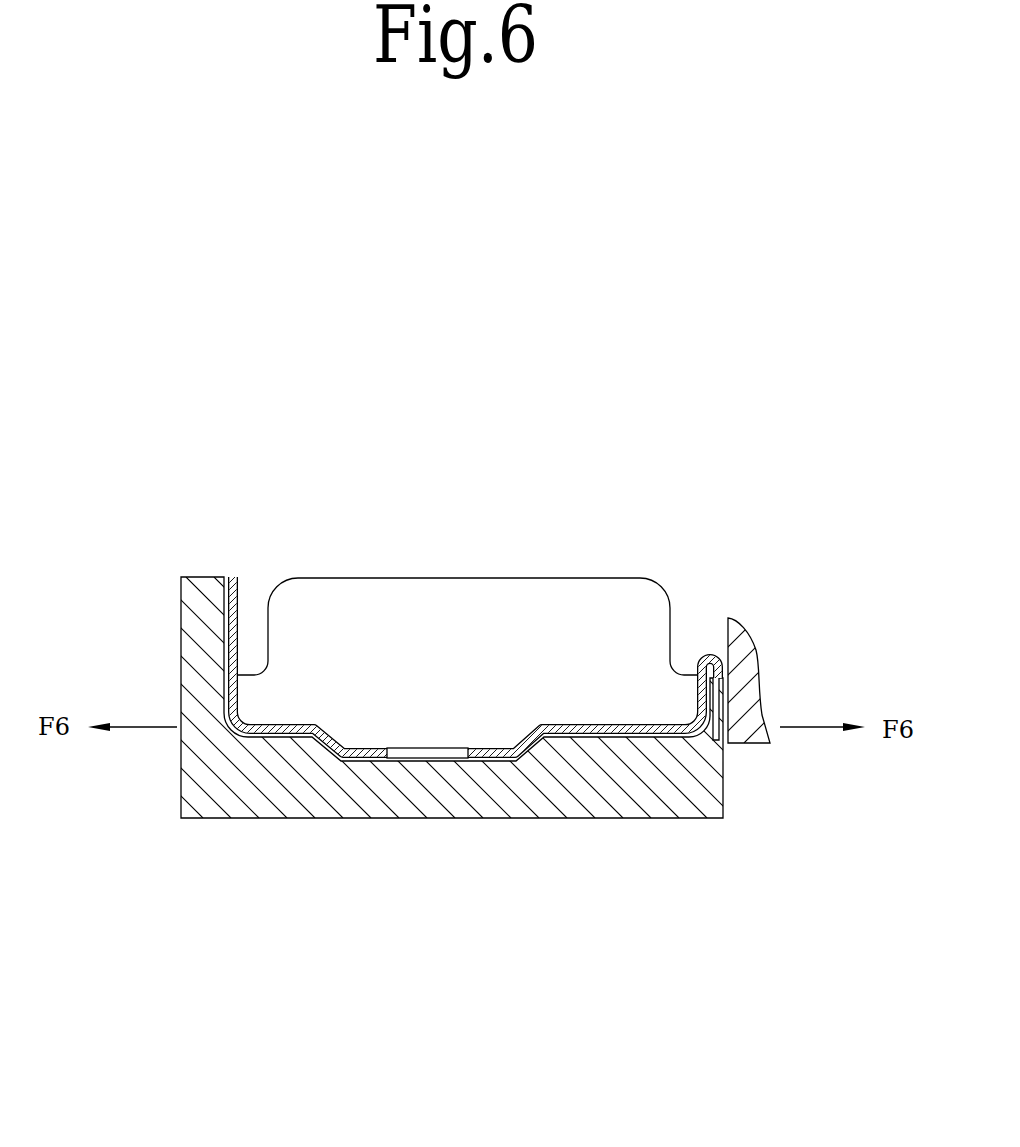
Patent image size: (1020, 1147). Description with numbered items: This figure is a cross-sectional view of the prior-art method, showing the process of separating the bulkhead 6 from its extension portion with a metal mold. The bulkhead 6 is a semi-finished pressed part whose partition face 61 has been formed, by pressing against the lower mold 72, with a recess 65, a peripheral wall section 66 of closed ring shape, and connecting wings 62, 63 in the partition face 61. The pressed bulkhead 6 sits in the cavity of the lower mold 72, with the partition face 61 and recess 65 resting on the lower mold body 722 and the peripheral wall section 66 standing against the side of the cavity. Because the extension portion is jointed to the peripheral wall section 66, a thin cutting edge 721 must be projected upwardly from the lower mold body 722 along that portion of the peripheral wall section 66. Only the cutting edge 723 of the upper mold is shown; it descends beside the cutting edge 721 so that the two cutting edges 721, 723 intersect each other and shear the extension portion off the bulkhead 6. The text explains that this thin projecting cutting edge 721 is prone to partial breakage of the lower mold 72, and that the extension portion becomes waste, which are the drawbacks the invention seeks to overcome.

The bulkhead 6 is at (471, 675).
The partition face 61 is at (276, 727).
The connecting wing 62 is at (232, 632).
The connecting wing 63 is at (528, 620).
The recess 65 is at (355, 732).
The peripheral wall section 66 is at (252, 683).
The lower mold 72 is at (202, 818).
The cutting edge 721 is at (716, 677).
The lower mold body 722 is at (525, 790).
The cutting edge 723 is at (733, 743).